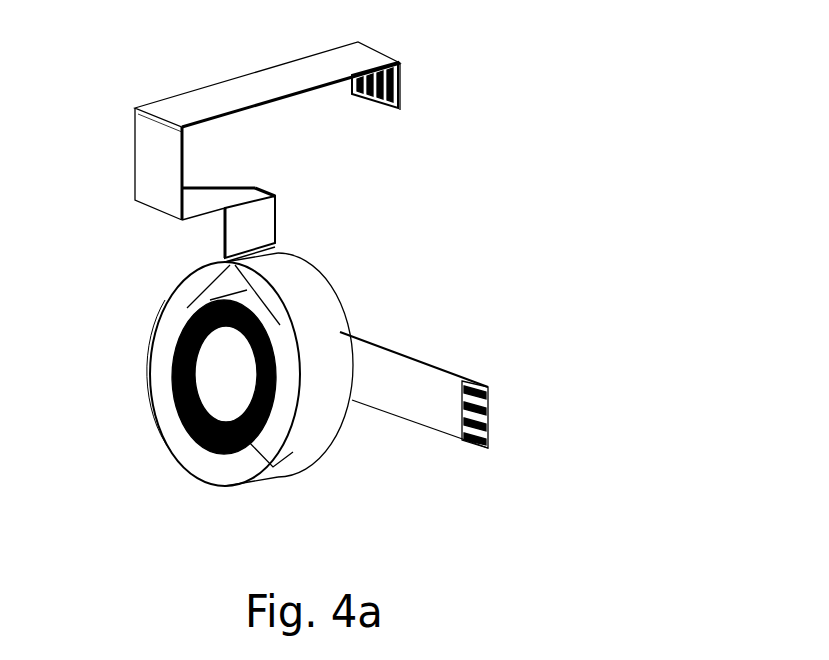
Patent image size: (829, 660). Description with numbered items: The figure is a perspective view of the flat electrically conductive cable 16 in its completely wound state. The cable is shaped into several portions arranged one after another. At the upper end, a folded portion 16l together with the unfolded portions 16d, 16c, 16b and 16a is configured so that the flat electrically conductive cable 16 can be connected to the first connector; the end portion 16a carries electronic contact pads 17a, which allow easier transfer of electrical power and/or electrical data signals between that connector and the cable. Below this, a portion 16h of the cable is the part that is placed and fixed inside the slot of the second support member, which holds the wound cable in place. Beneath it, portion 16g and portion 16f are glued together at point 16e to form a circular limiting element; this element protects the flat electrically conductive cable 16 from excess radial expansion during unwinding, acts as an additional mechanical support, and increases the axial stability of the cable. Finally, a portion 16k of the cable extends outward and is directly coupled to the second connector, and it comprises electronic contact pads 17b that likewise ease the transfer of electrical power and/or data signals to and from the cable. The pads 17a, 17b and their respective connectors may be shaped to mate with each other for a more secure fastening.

The flat electrically conductive cable 16 is at (362, 267).
The portion of the flat electrically conductive cable 16a is at (405, 88).
The unfolded portion of the flat electrically conductive cable 16b is at (260, 87).
The unfolded portion of the flat electrically conductive cable 16c is at (155, 162).
The unfolded portion of the flat electrically conductive cable 16d is at (195, 197).
The gluing point 16e is at (282, 256).
The portion of the flat electrically conductive cable 16f is at (190, 430).
The portion of the flat electrically conductive cable 16g is at (152, 320).
The portion of the flat electrically conductive cable 16h is at (262, 222).
The portion of the flat electrically conductive cable 16k is at (403, 400).
The folded portion of the flat electrically conductive cable 16l is at (253, 187).
The electronic contact pads 17a is at (395, 115).
The electronic contact pads 17b is at (467, 383).